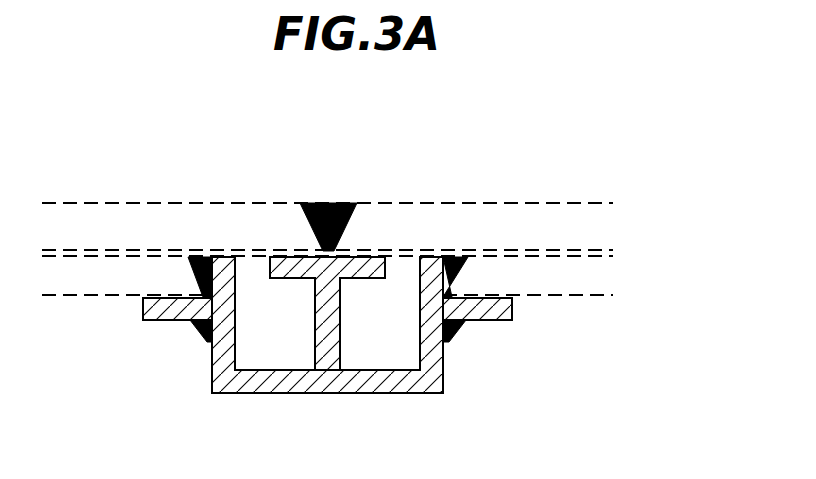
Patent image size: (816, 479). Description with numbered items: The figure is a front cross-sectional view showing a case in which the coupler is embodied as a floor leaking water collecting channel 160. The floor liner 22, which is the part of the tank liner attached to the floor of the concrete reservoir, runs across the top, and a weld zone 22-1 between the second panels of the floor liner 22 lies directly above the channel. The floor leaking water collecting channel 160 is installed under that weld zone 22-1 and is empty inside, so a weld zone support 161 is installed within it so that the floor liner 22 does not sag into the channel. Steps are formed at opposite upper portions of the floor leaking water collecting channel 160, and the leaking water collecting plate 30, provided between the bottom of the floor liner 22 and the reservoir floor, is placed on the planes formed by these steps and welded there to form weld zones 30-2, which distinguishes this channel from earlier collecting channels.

The floor liner 22 is at (72, 213).
The weld zone 22-1 is at (330, 204).
The leaking water collecting plate 30 is at (72, 290).
The weld zone 30-2 is at (198, 256).
The floor leaking water collecting channel 160 is at (482, 351).
The weld zone support 161 is at (343, 333).